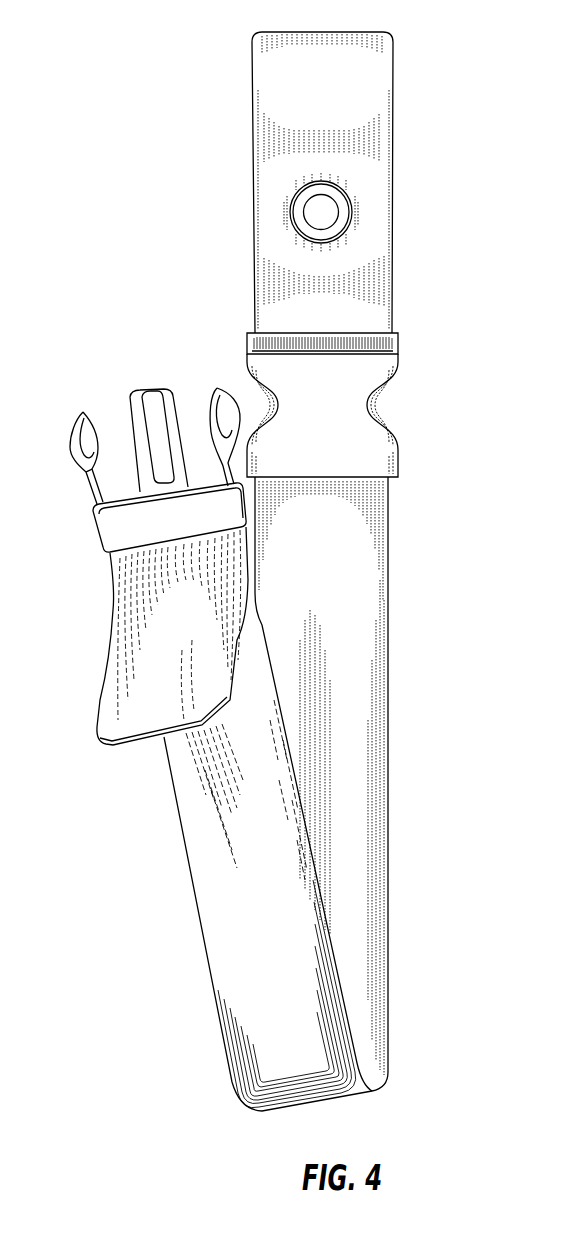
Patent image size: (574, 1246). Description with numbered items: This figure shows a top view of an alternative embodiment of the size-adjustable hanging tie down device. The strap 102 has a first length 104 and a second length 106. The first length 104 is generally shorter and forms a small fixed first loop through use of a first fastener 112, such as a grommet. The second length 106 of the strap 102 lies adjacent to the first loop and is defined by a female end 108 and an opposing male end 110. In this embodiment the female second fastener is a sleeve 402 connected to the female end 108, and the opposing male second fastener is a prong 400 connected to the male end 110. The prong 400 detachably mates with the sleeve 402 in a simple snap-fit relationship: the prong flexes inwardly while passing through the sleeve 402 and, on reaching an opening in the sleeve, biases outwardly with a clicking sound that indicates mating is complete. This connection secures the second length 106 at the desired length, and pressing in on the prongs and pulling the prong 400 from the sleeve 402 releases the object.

The prong 400 is at (128, 379).
The strap 102 is at (221, 905).
The first length 104 is at (415, 343).
The second length 106 is at (417, 1110).
The female end 108 is at (253, 333).
The male end 110 is at (112, 575).
The first fastener 112 is at (301, 214).
The sleeve 402 is at (387, 407).